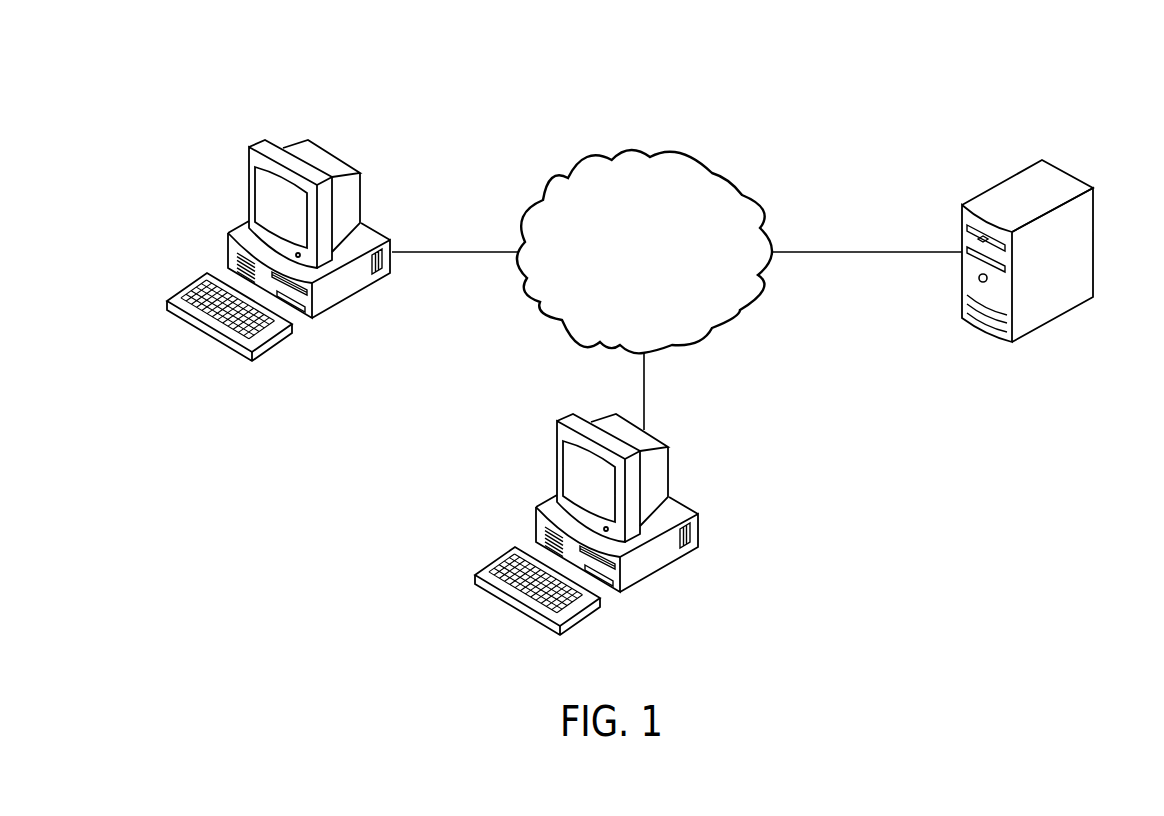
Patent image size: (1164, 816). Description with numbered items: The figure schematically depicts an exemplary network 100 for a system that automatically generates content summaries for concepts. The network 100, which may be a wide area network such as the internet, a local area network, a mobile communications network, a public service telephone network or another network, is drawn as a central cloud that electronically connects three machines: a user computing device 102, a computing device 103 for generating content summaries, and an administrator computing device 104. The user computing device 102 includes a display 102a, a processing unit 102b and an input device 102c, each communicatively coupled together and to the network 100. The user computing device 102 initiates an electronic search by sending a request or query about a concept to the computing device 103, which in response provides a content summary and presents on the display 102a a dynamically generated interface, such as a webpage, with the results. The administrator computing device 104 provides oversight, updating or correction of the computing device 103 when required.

The network 100 is at (730, 181).
The user computing device 102 is at (294, 202).
The display 102a is at (249, 160).
The processing unit 102b is at (337, 297).
The input device 102c is at (267, 347).
The computing device 103 is at (1072, 155).
The administrator computing device 104 is at (692, 462).